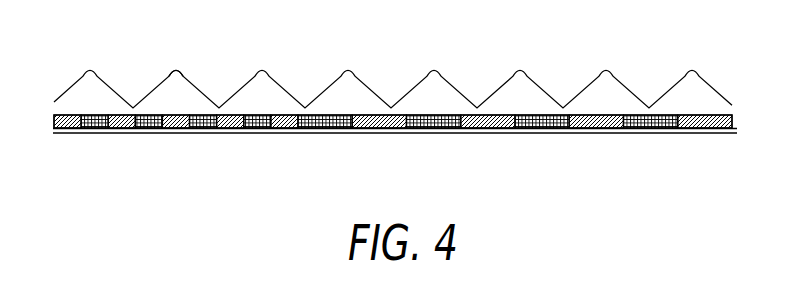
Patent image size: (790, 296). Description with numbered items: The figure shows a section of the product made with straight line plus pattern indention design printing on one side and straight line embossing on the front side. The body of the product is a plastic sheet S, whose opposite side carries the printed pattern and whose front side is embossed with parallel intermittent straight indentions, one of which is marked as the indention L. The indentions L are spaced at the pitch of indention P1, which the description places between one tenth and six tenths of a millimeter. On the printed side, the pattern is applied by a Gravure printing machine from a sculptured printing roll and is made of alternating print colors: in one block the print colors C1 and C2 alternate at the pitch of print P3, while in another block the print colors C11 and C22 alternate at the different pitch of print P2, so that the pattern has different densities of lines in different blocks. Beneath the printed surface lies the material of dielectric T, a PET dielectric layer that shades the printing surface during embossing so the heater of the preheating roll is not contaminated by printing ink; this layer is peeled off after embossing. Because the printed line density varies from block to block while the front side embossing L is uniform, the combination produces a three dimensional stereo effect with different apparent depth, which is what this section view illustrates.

The plastic sheet S is at (80, 103).
The indention L is at (184, 72).
The pitch of indention P1 is at (691, 34).
The pitch of print P2 is at (676, 173).
The pitch of print P3 is at (298, 175).
The print color C1 is at (101, 128).
The print color C2 is at (130, 128).
The print color C11 is at (323, 128).
The print color C22 is at (360, 128).
The material of dielectric T is at (495, 132).